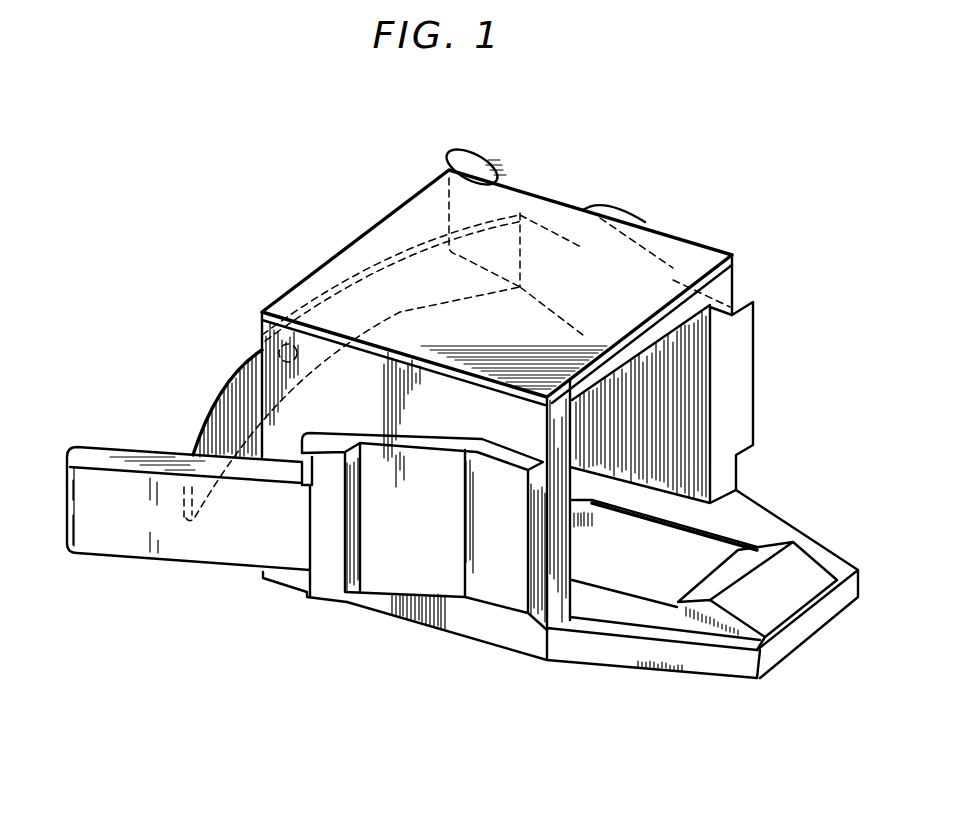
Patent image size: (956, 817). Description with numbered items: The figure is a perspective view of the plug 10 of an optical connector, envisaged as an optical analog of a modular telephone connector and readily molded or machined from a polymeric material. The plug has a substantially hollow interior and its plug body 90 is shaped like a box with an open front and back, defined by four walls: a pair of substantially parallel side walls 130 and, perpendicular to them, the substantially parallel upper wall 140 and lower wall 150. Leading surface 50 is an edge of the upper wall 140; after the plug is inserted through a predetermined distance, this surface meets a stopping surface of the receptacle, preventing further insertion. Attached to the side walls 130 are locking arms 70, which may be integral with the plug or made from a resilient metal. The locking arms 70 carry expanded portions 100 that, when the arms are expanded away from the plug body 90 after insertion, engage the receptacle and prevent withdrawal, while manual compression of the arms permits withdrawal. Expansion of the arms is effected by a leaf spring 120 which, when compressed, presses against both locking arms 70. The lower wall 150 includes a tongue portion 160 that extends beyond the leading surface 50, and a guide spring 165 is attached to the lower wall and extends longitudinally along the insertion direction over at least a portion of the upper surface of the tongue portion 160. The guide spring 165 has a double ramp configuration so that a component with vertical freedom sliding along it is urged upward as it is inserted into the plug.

The plug 10 is at (641, 139).
The leading surface 50 is at (650, 337).
The locking arms 70 is at (470, 158).
The plug body 90 is at (447, 617).
The expanded portions 100 is at (380, 578).
The leaf spring 120 is at (208, 410).
The side walls 130 is at (690, 240).
The upper wall 140 is at (386, 232).
The lower wall 150 is at (512, 653).
The tongue portion 160 is at (650, 658).
The guide spring 165 is at (760, 543).